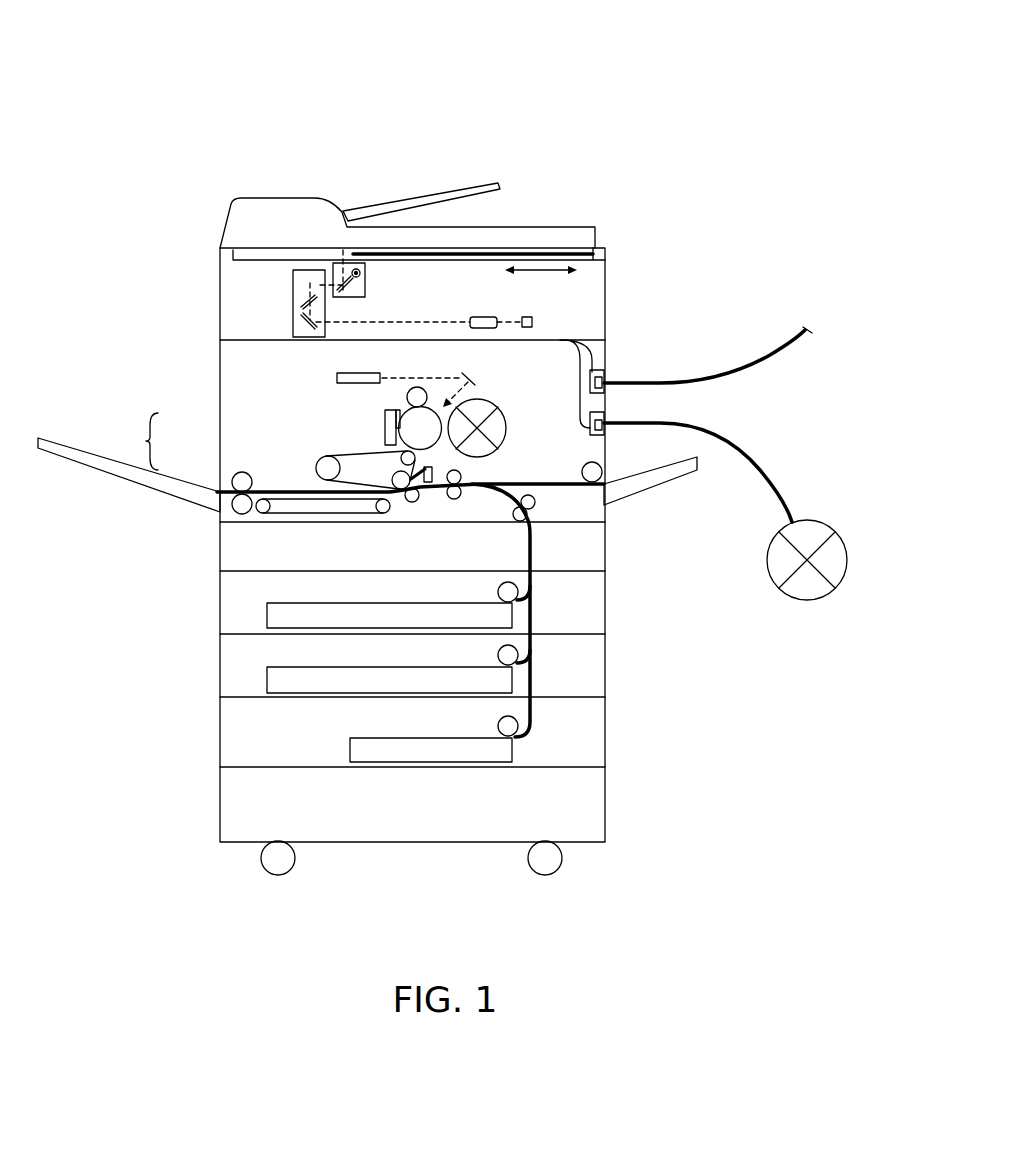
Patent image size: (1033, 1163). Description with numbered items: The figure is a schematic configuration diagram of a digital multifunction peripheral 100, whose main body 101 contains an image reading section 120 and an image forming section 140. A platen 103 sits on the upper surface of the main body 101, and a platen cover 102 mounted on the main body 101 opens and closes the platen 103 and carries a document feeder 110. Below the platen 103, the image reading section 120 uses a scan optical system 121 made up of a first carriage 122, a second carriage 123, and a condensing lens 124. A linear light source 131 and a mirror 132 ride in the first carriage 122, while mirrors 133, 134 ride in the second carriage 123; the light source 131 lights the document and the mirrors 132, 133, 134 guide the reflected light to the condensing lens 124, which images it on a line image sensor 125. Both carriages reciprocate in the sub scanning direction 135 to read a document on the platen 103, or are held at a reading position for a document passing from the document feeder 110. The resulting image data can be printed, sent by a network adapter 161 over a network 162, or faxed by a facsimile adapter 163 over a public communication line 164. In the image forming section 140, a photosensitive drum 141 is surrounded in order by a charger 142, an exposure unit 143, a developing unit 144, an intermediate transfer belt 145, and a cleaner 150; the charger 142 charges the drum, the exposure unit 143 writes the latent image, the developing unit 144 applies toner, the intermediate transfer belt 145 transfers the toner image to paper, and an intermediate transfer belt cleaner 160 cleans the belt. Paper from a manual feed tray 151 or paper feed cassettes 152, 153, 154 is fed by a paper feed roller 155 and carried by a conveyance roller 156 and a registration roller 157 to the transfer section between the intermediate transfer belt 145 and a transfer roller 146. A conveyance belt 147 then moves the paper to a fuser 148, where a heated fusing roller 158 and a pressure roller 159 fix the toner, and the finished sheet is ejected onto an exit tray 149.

The multifunction peripheral 100 is at (588, 92).
The main body 101 is at (202, 352).
The platen cover 102 is at (200, 200).
The platen 103 is at (515, 247).
The document feeder 110 is at (264, 194).
The image reading section 120 is at (603, 313).
The scan optical system 121 is at (594, 280).
The first carriage 122 is at (357, 297).
The second carriage 123 is at (293, 293).
The condensing lens 124 is at (497, 315).
The line image sensor 125 is at (533, 323).
The linear light source 131 is at (363, 272).
The mirror 132 is at (353, 285).
The mirror 133 is at (300, 280).
The mirror 134 is at (297, 328).
The sub scanning direction 135 is at (541, 281).
The image forming section 140 is at (603, 347).
The photosensitive drum 141 is at (442, 405).
The charger 142 is at (407, 398).
The exposure unit 143 is at (337, 378).
The developing unit 144 is at (498, 413).
The intermediate transfer belt 145 is at (340, 458).
The transfer roller 146 is at (412, 502).
The conveyance belt 147 is at (290, 513).
The fuser 148 is at (129, 441).
The exit tray 149 is at (52, 444).
The cleaner 150 is at (385, 430).
The manual feed tray 151 is at (650, 483).
The paper feed cassette 152 is at (267, 615).
The paper feed cassette 153 is at (267, 680).
The paper feed cassette 154 is at (350, 750).
The paper feed roller 155 is at (598, 463).
The conveyance roller 156 is at (535, 501).
The registration roller 157 is at (456, 499).
The fusing roller 158 is at (234, 476).
The pressure roller 159 is at (234, 499).
The intermediate transfer belt cleaner 160 is at (432, 474).
The network adapter 161 is at (603, 415).
The network 162 is at (822, 521).
The facsimile adapter 163 is at (603, 373).
The public communication line 164 is at (775, 363).